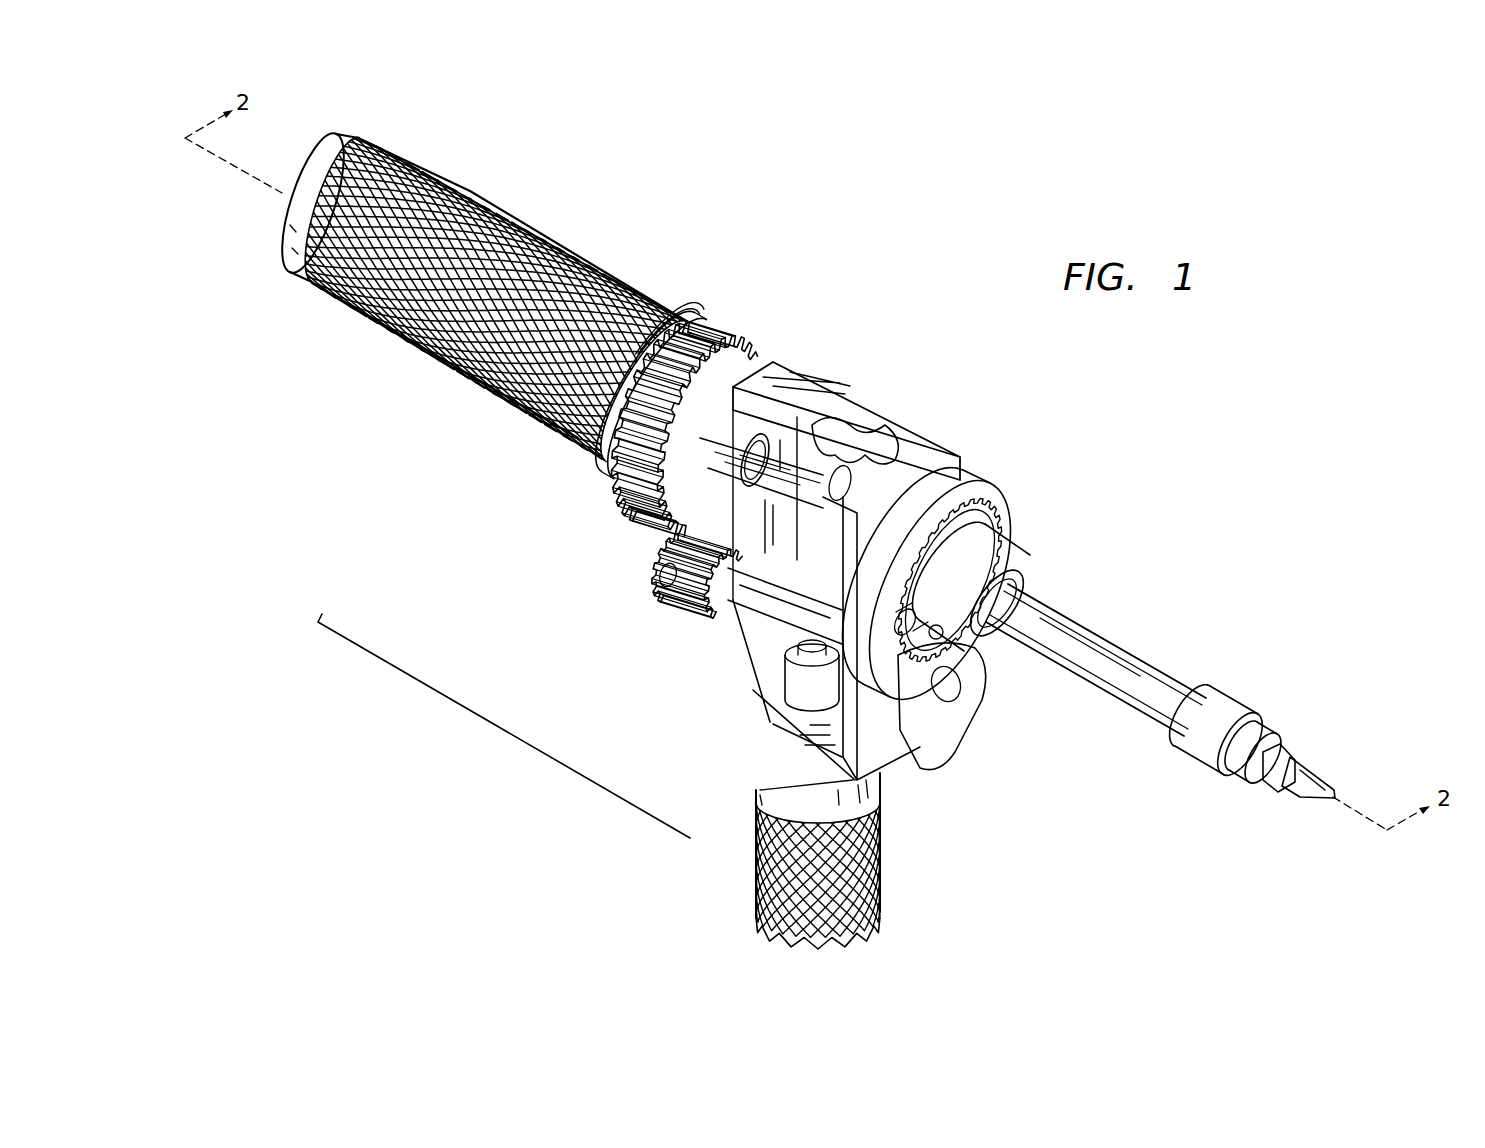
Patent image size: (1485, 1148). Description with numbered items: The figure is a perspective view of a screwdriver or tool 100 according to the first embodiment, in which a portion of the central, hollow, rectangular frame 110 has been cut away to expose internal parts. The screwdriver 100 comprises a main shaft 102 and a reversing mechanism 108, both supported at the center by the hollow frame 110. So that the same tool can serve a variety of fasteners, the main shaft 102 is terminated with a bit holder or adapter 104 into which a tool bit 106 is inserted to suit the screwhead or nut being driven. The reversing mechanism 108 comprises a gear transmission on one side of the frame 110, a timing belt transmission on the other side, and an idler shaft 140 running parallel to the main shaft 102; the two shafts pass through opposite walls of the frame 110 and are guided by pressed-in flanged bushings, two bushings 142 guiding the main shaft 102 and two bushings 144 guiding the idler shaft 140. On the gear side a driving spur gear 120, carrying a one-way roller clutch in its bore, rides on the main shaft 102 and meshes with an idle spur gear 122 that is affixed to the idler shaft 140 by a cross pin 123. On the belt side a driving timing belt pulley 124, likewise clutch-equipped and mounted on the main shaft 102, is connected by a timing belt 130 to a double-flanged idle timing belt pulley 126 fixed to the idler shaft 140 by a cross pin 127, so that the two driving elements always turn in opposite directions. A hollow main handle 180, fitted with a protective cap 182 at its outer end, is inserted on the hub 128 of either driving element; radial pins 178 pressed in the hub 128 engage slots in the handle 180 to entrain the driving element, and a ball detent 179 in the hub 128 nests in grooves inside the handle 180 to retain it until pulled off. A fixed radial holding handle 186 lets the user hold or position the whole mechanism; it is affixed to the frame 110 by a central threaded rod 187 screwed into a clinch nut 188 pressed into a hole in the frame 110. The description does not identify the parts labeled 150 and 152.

The screwdriver or tool 100 is at (1216, 460).
The main shaft 102 is at (650, 308).
The bit holder or adapter 104 is at (1232, 720).
The tool bit 106 is at (1305, 768).
The reversing mechanism 108 is at (516, 739).
The hollow rectangular frame 110 is at (798, 365).
The spur gear 120 is at (750, 318).
The spur gear 122 is at (650, 566).
The cross pin 123 is at (652, 583).
The timing belt pulley 124 is at (983, 510).
The double-flanged idle timing belt pulley 126 is at (933, 745).
The cross pin 127 is at (930, 733).
The hub 128 is at (677, 303).
The timing belt 130 is at (962, 478).
The idler shaft 140 is at (755, 638).
The flanged bushings 142 is at (858, 430).
The flanged bushings 144 is at (700, 622).
The bearing ring 150 is at (1000, 580).
The outer shaft 152 is at (1035, 600).
The radial pins 178 is at (612, 447).
The ball detent 179 is at (966, 690).
The main handle 180 is at (454, 177).
The protective cap 182 is at (323, 152).
The fixed holding handle 186 is at (882, 880).
The central threaded rod 187 is at (768, 643).
The clinch nut 188 is at (805, 688).